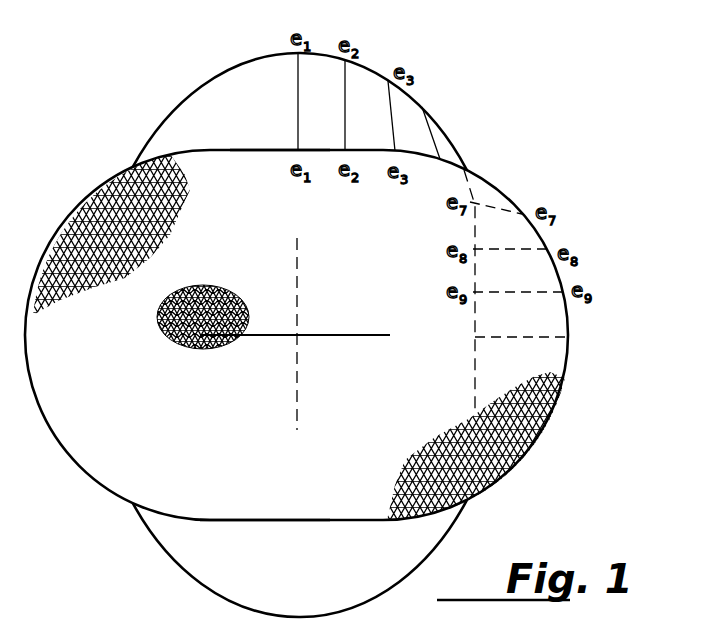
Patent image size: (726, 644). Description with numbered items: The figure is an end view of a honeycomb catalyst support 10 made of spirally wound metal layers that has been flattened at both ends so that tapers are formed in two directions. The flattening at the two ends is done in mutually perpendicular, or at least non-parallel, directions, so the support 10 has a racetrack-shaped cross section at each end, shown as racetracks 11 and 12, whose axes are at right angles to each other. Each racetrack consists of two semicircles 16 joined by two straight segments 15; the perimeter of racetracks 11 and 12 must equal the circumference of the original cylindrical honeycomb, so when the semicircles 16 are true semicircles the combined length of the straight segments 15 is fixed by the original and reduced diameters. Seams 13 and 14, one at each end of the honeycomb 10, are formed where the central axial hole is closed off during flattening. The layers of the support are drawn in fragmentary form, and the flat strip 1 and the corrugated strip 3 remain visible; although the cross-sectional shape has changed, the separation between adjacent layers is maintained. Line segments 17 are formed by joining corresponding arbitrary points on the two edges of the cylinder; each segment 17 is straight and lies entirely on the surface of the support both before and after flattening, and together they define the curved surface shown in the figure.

The flat strip 1 is at (167, 213).
The corrugated strip 3 is at (187, 187).
The honeycomb catalyst support 10 is at (426, 103).
The racetrack 11 is at (370, 70).
The racetrack 12 is at (568, 315).
The seam 13 is at (299, 293).
The seam 14 is at (345, 338).
The straight segments 15 is at (256, 153).
The semicircles 16 is at (45, 420).
The line segments 17 is at (345, 133).